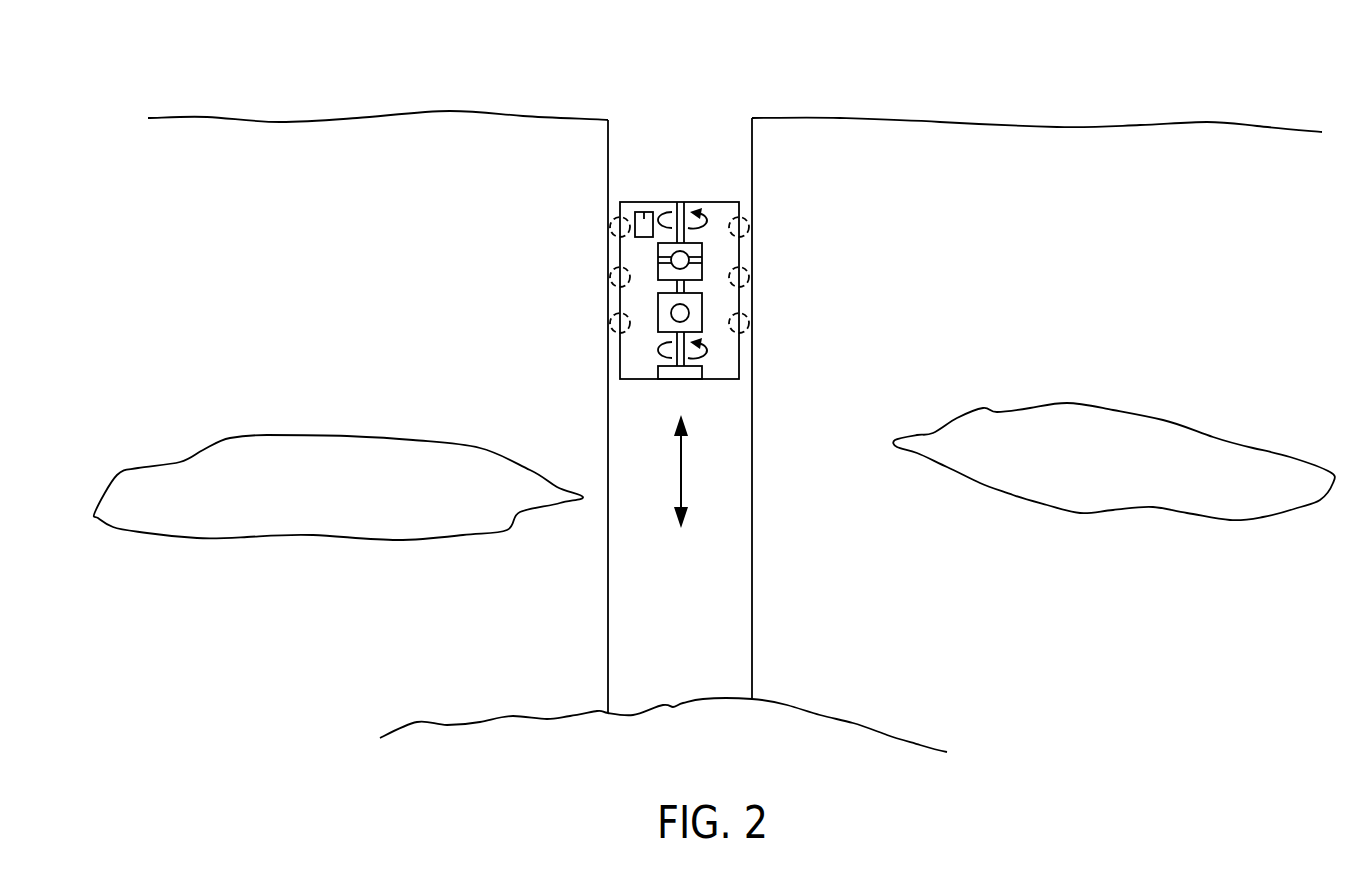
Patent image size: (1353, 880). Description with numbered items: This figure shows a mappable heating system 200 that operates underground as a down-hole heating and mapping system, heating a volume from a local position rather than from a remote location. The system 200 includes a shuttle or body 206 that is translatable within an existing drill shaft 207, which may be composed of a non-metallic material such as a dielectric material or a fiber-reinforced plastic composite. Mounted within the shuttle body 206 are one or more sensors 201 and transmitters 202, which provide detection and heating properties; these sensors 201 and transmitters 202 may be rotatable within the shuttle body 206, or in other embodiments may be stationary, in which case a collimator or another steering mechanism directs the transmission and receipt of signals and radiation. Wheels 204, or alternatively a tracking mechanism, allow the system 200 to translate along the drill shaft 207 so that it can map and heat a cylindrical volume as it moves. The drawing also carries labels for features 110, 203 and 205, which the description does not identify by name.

The subterranean formation 110 is at (307, 460).
The mappable heating system 200 is at (683, 160).
The sensors 201 is at (695, 320).
The transmitters 202 is at (702, 248).
The controller 203 is at (641, 212).
The wheels 204 is at (612, 223).
The sensor element 205 is at (703, 262).
The shuttle body 206 is at (752, 148).
The drill shaft 207 is at (692, 378).